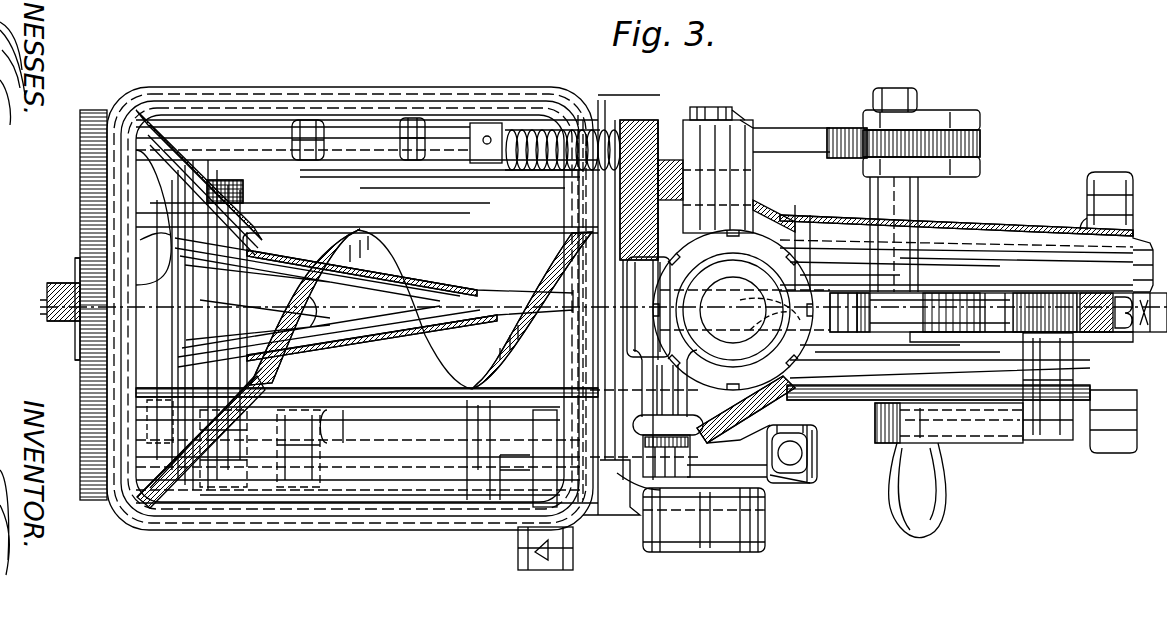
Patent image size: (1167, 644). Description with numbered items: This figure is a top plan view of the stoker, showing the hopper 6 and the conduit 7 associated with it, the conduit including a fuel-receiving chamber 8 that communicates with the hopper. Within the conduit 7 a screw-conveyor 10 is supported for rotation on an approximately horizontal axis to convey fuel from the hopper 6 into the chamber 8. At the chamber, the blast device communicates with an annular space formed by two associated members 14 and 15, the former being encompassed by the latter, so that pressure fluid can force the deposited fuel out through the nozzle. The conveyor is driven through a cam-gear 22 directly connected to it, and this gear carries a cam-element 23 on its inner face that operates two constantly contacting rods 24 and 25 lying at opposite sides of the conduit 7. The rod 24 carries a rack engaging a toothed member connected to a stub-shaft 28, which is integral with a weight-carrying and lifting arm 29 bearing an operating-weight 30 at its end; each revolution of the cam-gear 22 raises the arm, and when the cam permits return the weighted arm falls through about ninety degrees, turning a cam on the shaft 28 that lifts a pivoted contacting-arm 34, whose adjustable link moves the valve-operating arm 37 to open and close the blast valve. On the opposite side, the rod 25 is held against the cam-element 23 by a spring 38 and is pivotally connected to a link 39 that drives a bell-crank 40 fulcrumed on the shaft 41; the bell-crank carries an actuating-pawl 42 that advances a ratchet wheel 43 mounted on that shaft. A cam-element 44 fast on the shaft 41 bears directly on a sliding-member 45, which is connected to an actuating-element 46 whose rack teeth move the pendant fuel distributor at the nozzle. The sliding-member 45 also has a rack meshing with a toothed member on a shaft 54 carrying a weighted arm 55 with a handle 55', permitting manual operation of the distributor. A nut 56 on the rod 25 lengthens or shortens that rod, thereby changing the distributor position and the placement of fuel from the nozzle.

The hopper 6 is at (452, 525).
The conduit 7 is at (410, 343).
The fuel-receiving chamber 8 is at (1028, 232).
The screw-conveyor 10 is at (462, 293).
The inner annular member 14 is at (790, 385).
The outer annular member 15 is at (780, 402).
The cam-gear 22 is at (80, 186).
The cam-element 23 is at (156, 100).
The rod 24 is at (400, 486).
The rod 25 is at (456, 130).
The stub-shaft 28 is at (528, 565).
The weight-carrying and lifting arm 29 is at (628, 516).
The operating-weight 30 is at (766, 535).
The contacting-arm 34 is at (406, 446).
The valve-operating arm 37 is at (770, 480).
The spring 38 is at (612, 122).
The link 39 is at (792, 118).
The bell-crank 40 is at (985, 103).
The shaft 41 is at (902, 90).
The actuating-pawl 42 is at (978, 142).
The ratchet wheel 43 is at (838, 126).
The cam-element 44 is at (840, 292).
The sliding-member 45 is at (990, 305).
The actuating-element 46 is at (1160, 305).
The shaft 54 is at (1045, 364).
The weighted arm 55 is at (650, 480).
The handle 55' is at (933, 490).
The nut 56 is at (360, 150).